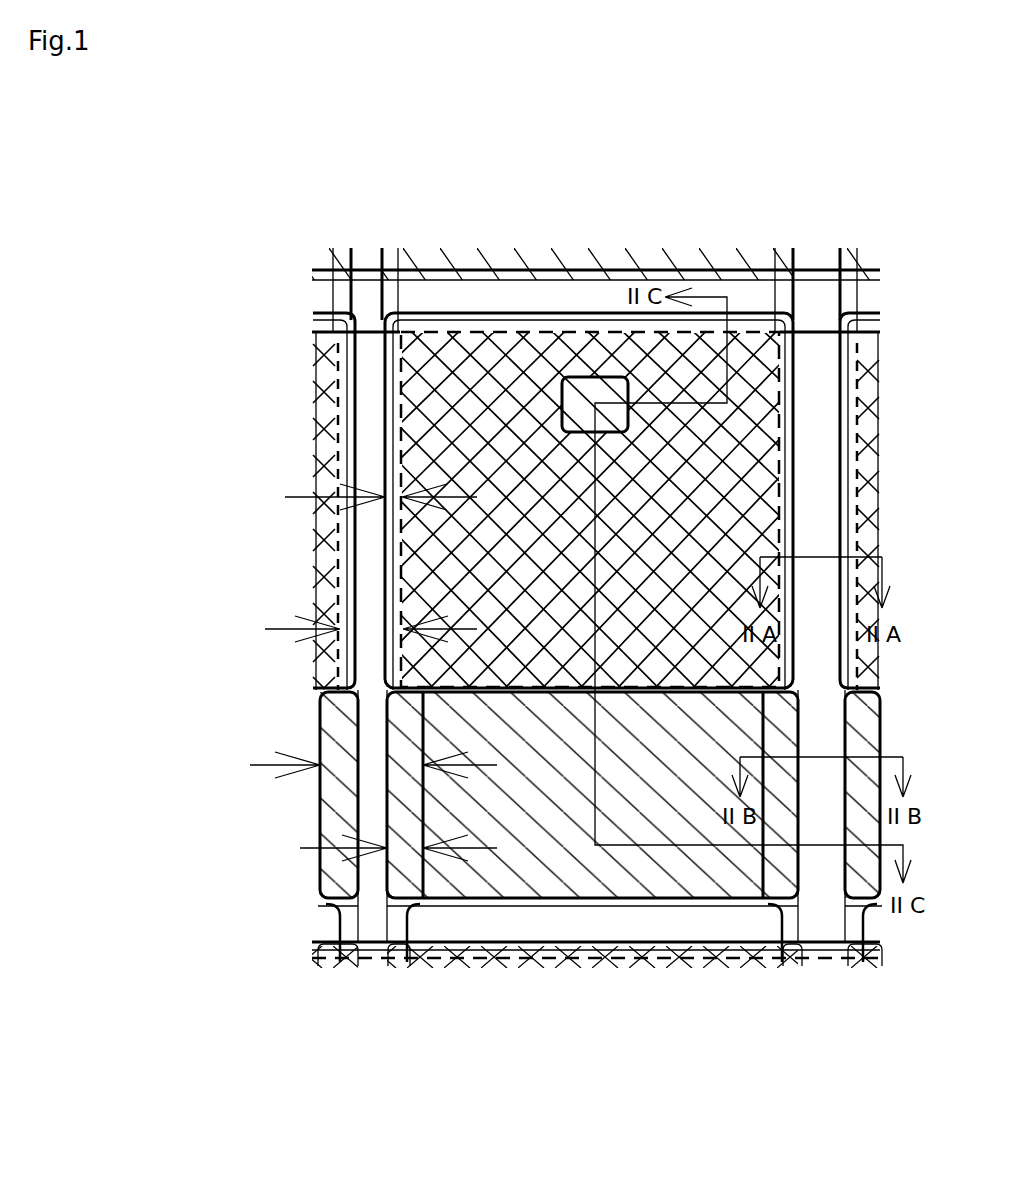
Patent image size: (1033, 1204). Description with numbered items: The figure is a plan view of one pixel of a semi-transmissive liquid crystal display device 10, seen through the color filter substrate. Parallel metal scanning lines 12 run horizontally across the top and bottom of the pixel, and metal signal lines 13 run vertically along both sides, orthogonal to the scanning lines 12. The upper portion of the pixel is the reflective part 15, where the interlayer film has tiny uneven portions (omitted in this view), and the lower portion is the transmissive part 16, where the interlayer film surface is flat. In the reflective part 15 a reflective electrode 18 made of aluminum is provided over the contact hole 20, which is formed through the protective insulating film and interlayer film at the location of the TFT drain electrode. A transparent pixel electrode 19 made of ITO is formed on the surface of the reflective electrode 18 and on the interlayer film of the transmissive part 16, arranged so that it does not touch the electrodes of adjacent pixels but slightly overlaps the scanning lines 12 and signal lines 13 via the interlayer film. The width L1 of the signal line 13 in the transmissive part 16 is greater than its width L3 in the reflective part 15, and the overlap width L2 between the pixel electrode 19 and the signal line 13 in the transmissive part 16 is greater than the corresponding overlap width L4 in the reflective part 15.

The semi-transmissive liquid crystal display device 10 is at (262, 228).
The scanning line 12 is at (757, 300).
The signal line 13 is at (822, 382).
The reflective part 15 is at (460, 330).
The transmissive part 16 is at (568, 880).
The reflective electrode 18 is at (757, 442).
The pixel electrode 19 is at (562, 818).
The contact hole 20 is at (572, 377).
The width of the signal line in the transmissive part L1 is at (351, 766).
The width of the overlapping portion of the pixel electrode and signal line at the t L2 is at (377, 849).
The width of the signal line in the reflective part L3 is at (346, 630).
The overlapping width between the pixel electrode and signal line at the reflective L4 is at (356, 498).